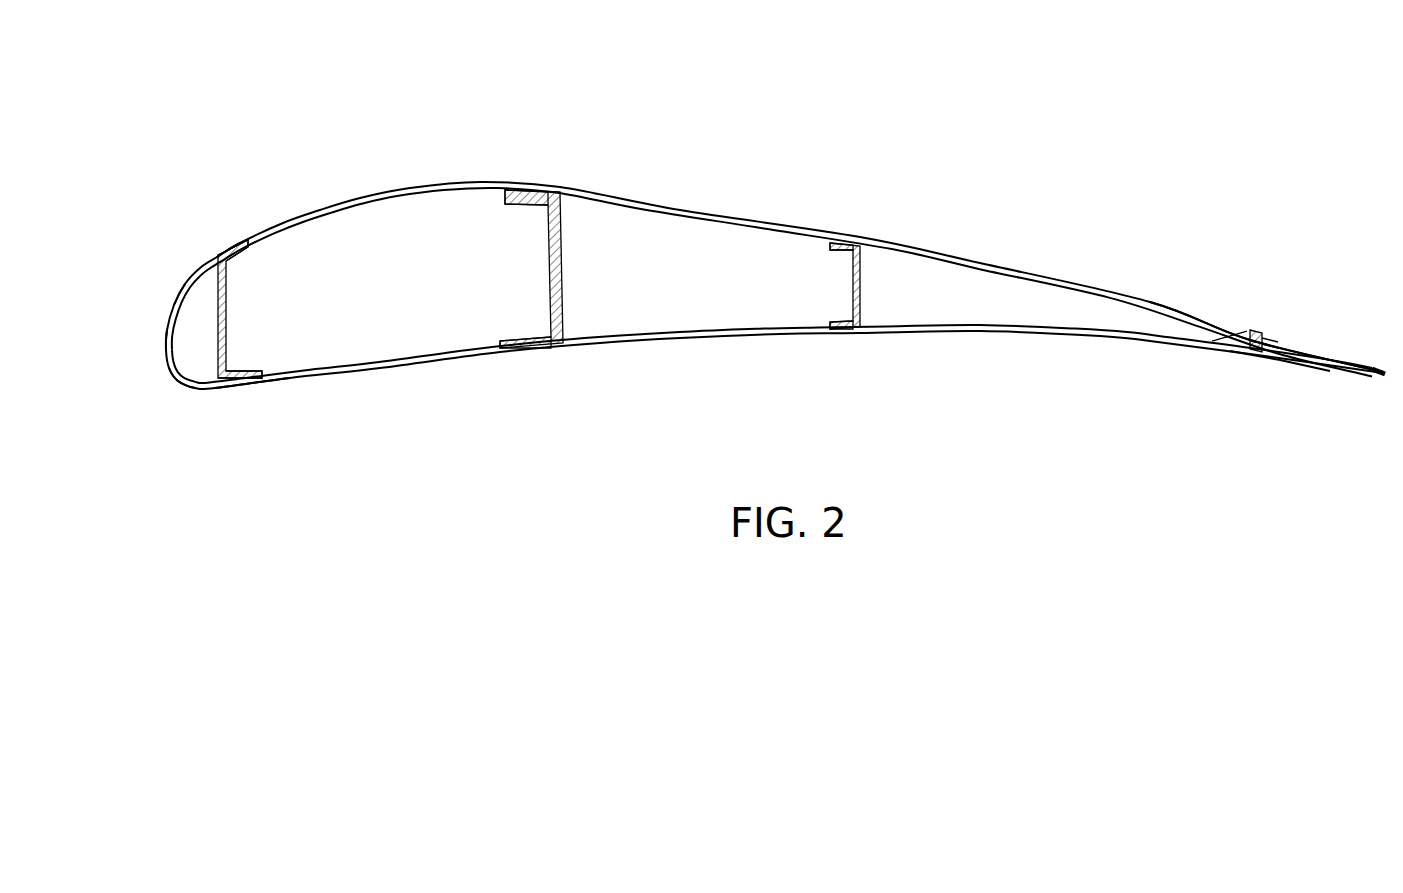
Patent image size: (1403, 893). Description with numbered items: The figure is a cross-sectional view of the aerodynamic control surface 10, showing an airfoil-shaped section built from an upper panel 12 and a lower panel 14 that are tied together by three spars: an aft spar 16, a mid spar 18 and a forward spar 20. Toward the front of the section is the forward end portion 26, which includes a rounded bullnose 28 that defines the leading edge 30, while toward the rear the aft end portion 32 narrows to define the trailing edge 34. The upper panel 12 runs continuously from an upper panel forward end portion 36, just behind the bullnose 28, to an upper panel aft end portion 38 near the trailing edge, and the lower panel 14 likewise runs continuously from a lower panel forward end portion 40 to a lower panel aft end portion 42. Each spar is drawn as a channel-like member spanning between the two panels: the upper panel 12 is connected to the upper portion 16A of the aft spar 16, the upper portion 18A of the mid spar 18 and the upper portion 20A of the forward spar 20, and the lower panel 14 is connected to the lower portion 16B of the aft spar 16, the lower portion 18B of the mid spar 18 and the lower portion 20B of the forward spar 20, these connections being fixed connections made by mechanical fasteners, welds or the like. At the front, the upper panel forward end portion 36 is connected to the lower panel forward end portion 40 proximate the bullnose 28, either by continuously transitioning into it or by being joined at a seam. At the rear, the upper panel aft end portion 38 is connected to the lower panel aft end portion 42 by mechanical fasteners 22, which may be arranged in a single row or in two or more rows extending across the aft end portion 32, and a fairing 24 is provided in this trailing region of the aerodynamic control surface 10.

The aerodynamic control surface 10 is at (989, 164).
The upper panel 12 is at (590, 186).
The lower panel 14 is at (660, 346).
The aft spar 16 is at (862, 290).
The upper portion of the aft spar 16A is at (832, 257).
The lower portion of the aft spar 16B is at (832, 312).
The mid spar 18 is at (562, 278).
The upper portion of the mid spar 18A is at (513, 211).
The lower portion of the mid spar 18B is at (514, 334).
The forward spar 20 is at (230, 325).
The upper portion of the forward spar 20A is at (242, 261).
The lower portion of the forward spar 20B is at (262, 362).
The mechanical fasteners 22 is at (1250, 338).
The fairing 24 is at (1303, 362).
The forward end portion 26 is at (190, 218).
The bullnose 28 is at (183, 390).
The leading edge 30 is at (165, 345).
The aft end portion 32 is at (1337, 273).
The trailing edge 34 is at (1385, 377).
The upper panel forward end portion 36 is at (222, 232).
The upper panel aft end portion 38 is at (1286, 243).
The lower panel forward end portion 40 is at (228, 400).
The lower panel aft end portion 42 is at (1255, 389).